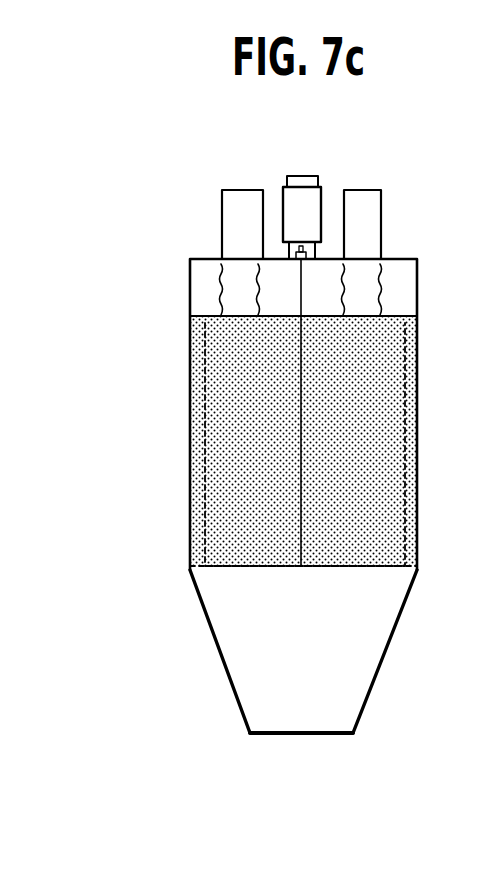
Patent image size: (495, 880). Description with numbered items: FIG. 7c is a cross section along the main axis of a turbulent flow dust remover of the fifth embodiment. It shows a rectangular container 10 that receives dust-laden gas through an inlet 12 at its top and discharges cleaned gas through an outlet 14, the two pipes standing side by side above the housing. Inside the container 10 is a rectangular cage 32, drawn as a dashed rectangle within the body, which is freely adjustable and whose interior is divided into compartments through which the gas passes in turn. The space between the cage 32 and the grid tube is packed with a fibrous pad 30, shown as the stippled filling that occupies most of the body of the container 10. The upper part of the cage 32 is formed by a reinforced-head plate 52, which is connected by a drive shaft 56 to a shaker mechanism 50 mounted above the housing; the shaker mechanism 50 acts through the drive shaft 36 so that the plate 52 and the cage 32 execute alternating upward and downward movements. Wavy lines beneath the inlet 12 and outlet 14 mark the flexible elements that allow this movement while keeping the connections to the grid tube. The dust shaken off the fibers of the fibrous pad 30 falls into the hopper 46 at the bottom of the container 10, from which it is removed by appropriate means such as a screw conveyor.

The container 10 is at (184, 293).
The inlet 12 is at (363, 205).
The outlet 14 is at (238, 203).
The fibrous pad 30 is at (221, 358).
The cage 32 is at (404, 455).
The drive shaft 36 is at (282, 285).
The hopper 46 is at (385, 608).
The shaker mechanism 50 is at (298, 203).
The reinforced-head plate 52 is at (404, 312).
The drive shaft 56 is at (292, 240).